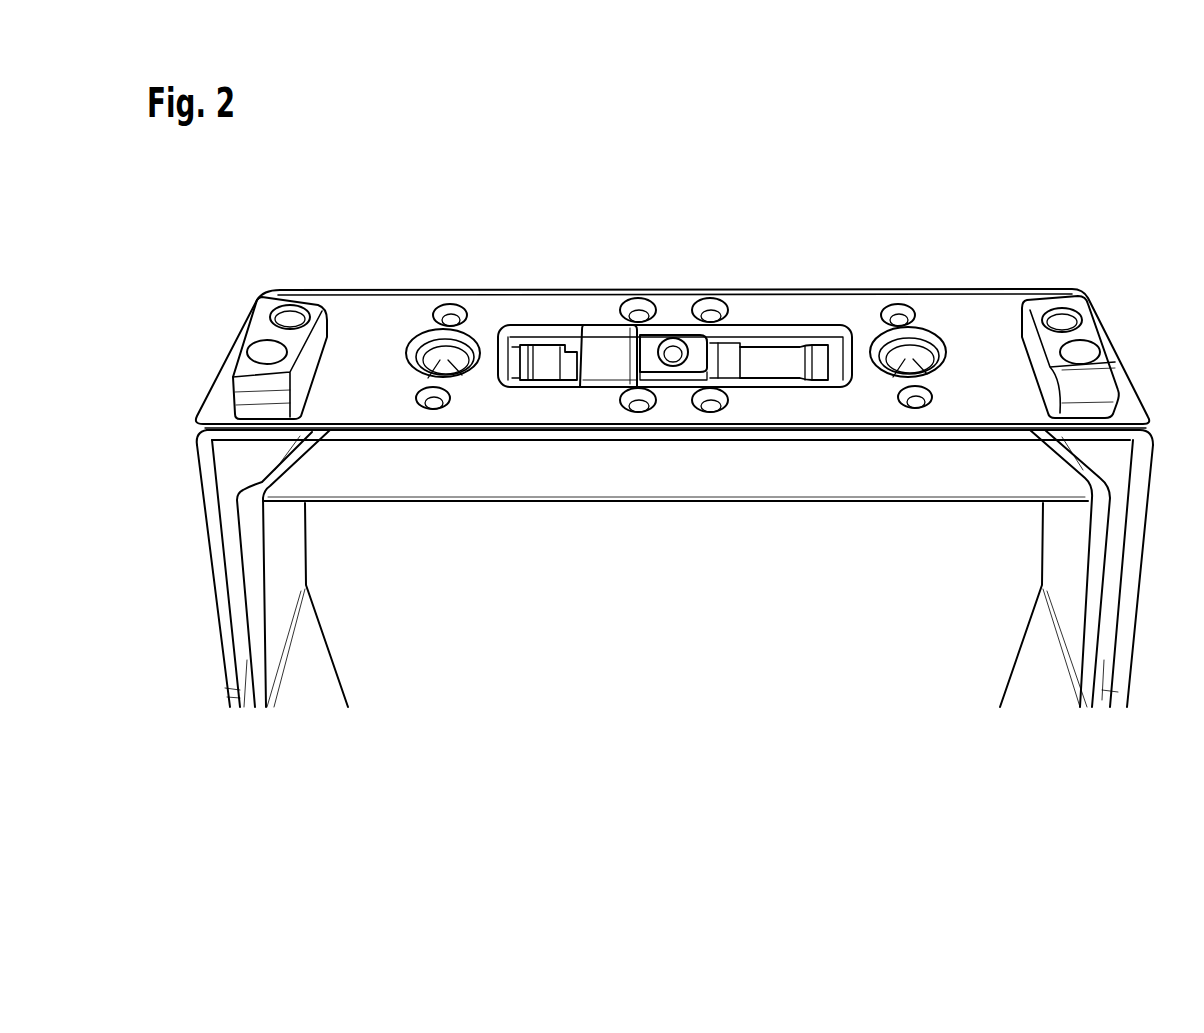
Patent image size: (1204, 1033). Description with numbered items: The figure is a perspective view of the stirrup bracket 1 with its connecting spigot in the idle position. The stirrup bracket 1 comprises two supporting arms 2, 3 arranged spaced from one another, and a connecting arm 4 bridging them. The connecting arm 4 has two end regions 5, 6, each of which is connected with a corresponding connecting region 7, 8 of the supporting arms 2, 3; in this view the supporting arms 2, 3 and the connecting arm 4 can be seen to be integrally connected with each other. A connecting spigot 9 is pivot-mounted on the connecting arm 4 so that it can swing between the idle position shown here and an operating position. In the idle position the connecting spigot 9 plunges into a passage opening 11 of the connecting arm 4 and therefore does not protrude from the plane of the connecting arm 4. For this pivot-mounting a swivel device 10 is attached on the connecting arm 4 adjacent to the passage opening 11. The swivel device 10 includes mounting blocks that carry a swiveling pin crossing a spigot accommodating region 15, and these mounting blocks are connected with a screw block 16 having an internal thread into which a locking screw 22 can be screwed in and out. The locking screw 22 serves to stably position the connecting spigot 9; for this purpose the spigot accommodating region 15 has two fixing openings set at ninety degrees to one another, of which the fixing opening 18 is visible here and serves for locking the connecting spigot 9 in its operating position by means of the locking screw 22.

The stirrup bracket 1 is at (944, 238).
The supporting arm 2 is at (1133, 575).
The supporting arm 3 is at (222, 603).
The connecting arm 4 is at (783, 291).
The end region 5 is at (1117, 427).
The end region 6 is at (236, 426).
The connecting region 7 is at (1138, 433).
The connecting region 8 is at (203, 441).
The connecting spigot 9 is at (751, 342).
The swivel device 10 is at (672, 335).
The passage opening 11 is at (558, 337).
The spigot accommodating region 15 is at (695, 352).
The screw block 16 is at (607, 350).
The fixing opening 18 is at (697, 372).
The locking screw 22 is at (551, 367).